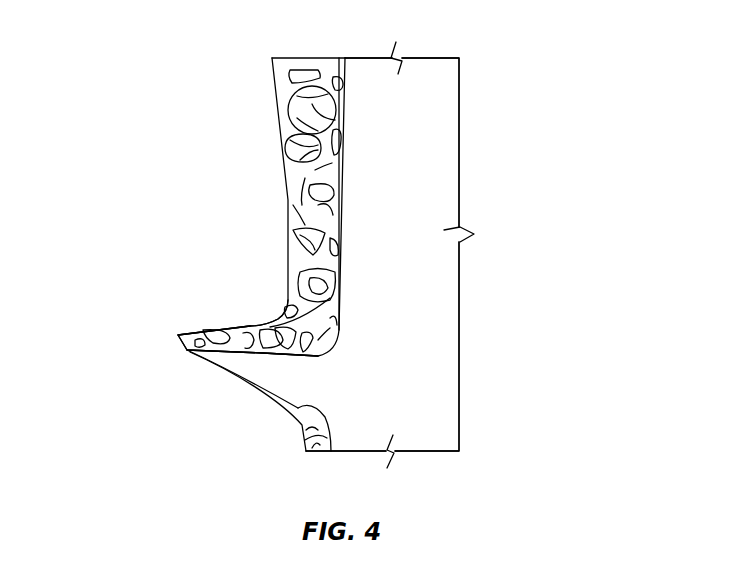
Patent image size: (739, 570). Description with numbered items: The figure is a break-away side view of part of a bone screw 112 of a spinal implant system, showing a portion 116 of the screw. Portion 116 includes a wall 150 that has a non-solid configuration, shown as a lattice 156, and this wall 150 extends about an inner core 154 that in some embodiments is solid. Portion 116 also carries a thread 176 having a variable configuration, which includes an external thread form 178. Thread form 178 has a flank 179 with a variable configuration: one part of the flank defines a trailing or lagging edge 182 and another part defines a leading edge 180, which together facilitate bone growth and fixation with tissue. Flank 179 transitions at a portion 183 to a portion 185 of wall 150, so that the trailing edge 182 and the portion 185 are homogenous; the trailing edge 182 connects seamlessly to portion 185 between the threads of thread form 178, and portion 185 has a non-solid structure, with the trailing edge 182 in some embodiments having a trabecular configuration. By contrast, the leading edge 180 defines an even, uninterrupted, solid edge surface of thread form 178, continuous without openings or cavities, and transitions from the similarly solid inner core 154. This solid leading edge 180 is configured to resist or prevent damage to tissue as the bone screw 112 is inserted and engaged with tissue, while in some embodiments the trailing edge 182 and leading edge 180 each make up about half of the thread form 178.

The bone screw 112 is at (563, 108).
The portion 116 is at (196, 46).
The inner core 154 is at (422, 168).
The portion of wall 185 is at (310, 268).
The lattice 156 is at (293, 108).
The wall 150 is at (318, 147).
The transition portion 183 is at (265, 296).
The thread 176 is at (157, 332).
The trailing edge 182 is at (222, 327).
The flank 179 is at (266, 367).
The external thread form 178 is at (248, 362).
The leading edge 180 is at (253, 387).